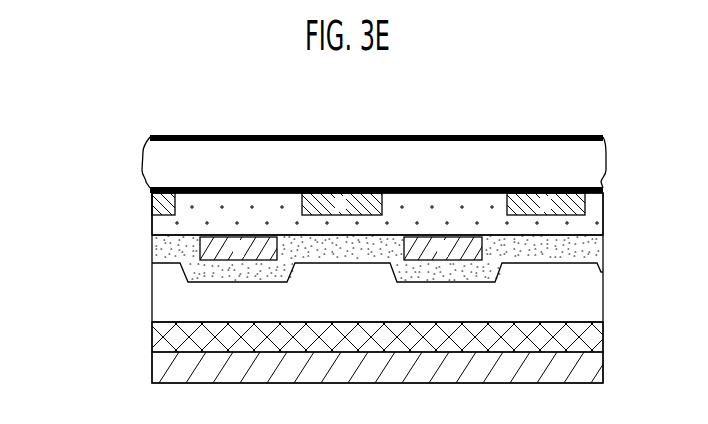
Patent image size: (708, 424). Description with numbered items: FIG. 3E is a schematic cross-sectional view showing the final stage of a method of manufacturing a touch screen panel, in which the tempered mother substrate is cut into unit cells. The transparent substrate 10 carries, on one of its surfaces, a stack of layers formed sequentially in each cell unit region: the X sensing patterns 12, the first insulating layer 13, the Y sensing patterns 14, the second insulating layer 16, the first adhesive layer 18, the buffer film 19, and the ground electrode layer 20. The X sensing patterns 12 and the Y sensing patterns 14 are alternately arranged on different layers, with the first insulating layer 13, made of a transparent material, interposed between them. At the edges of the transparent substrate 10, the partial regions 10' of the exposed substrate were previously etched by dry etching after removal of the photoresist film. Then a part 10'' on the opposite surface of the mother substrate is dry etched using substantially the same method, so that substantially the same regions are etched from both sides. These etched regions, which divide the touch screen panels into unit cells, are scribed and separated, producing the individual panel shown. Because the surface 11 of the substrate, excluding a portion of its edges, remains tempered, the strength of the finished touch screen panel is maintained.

The transparent substrate 10 is at (399, 164).
The partial region of the exposed substrate 10' is at (114, 212).
The part on the opposite surface of the mother substrate 10'' is at (111, 121).
The surface 11 is at (494, 188).
The X sensing patterns 12 is at (588, 200).
The first insulating layer 13 is at (597, 228).
The Y sensing patterns 14 is at (484, 283).
The second insulating layer 16 is at (594, 253).
The first adhesive layer 18 is at (594, 310).
The buffer film 19 is at (598, 336).
The ground electrode layer 20 is at (598, 364).